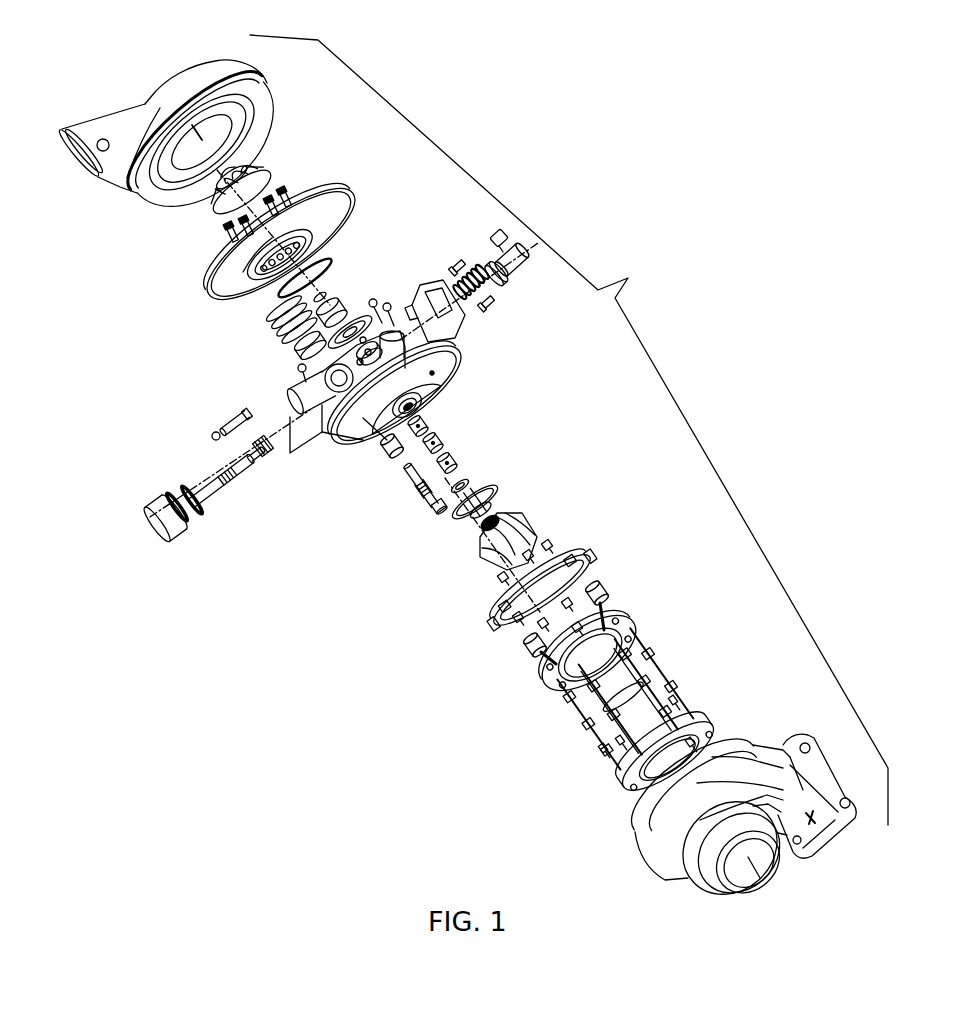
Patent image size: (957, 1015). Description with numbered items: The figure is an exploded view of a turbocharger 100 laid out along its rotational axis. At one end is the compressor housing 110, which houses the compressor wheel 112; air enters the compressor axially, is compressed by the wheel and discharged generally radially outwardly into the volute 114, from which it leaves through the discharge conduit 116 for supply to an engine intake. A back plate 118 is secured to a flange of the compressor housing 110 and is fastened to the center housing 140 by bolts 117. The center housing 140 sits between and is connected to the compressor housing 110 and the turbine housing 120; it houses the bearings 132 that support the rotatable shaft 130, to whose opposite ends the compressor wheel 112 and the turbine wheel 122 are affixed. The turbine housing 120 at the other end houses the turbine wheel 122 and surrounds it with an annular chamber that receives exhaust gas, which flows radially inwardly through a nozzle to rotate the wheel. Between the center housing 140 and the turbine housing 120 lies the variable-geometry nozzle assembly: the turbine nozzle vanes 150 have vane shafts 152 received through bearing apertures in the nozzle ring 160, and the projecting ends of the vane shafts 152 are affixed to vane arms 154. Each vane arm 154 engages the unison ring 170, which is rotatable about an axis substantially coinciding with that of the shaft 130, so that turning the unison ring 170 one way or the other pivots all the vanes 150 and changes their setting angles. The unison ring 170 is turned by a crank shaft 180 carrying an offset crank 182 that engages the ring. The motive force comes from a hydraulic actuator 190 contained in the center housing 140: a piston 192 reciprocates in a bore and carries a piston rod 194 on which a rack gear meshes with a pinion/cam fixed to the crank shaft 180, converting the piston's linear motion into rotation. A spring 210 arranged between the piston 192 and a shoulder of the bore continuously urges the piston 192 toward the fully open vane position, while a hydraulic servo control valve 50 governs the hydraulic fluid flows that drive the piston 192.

The turbocharger 100 is at (569, 430).
The compressor housing 110 is at (194, 118).
The compressor wheel 112 is at (243, 163).
The volute 114 is at (203, 75).
The discharge conduit 116 is at (75, 163).
The bolts 117 is at (273, 196).
The back plate 118 is at (345, 193).
The hydraulic servo control valve 50 is at (475, 257).
The center housing 140 is at (443, 355).
The rotatable shaft 130 is at (490, 525).
The bearings 132 is at (438, 414).
The turbine wheel 122 is at (522, 522).
The crank shaft 180 is at (422, 487).
The offset crank 182 is at (437, 511).
The unison ring 170 is at (497, 613).
The vane arms 154 is at (597, 585).
The nozzle ring 160 is at (628, 619).
The vane shafts 152 is at (640, 658).
The turbine nozzle vanes 150 is at (650, 672).
The turbine housing 120 is at (660, 847).
The hydraulic actuator 190 is at (211, 476).
The piston 192 is at (177, 493).
The piston rod 194 is at (215, 472).
The spring 210 is at (268, 453).